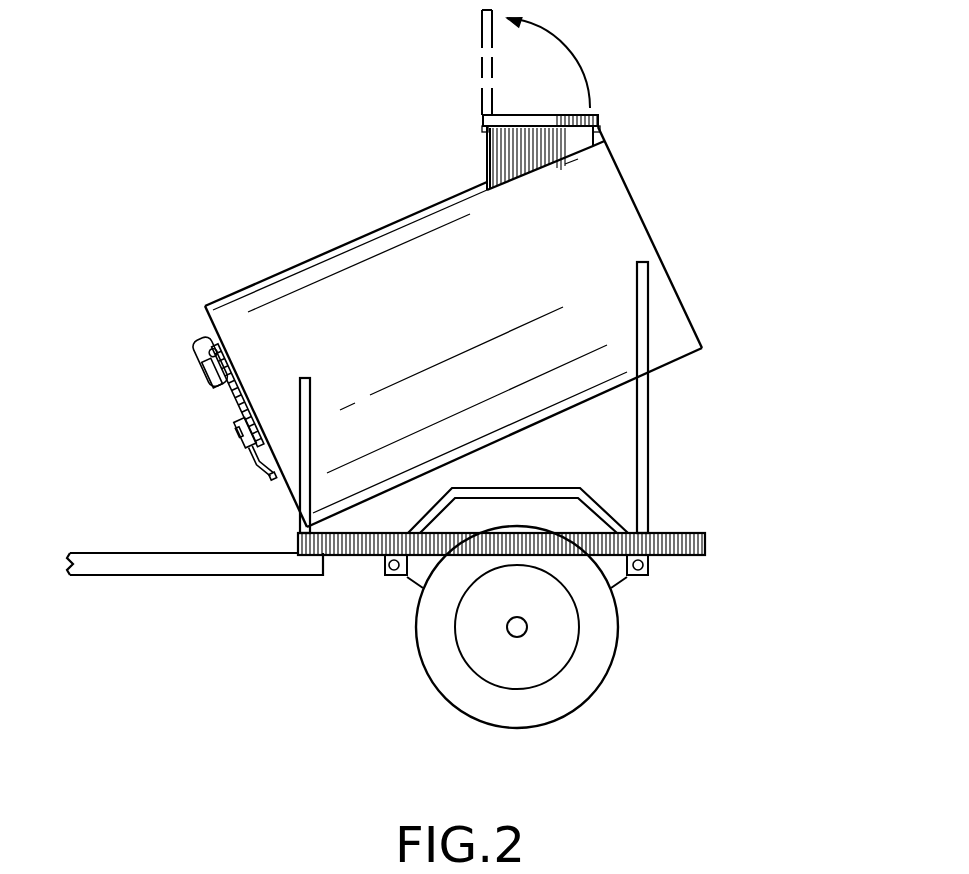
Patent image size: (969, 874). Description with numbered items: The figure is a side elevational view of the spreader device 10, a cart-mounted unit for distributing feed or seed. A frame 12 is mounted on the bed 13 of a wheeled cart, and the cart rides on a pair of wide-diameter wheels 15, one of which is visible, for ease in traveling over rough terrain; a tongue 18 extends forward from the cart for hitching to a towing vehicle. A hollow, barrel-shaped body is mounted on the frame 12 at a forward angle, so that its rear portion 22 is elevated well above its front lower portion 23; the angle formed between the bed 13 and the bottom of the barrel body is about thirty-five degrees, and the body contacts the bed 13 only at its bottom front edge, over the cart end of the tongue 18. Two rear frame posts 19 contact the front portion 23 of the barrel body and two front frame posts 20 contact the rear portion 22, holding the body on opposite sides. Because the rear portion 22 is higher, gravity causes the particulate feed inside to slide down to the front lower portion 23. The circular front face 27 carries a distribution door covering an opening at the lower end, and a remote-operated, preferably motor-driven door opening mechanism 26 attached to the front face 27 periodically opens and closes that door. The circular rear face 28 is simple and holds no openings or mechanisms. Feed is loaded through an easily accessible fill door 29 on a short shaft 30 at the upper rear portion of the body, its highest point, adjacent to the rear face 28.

The spreader device 10 is at (642, 160).
The frame 12 is at (657, 417).
The bed 13 is at (705, 543).
The wheels 15 is at (603, 657).
The tongue 18 is at (150, 575).
The rear frame posts 19 is at (648, 482).
The front frame posts 20 is at (302, 516).
The rear portion 22 is at (690, 308).
The front lower portion 23 is at (281, 492).
The door opening mechanism 26 is at (205, 388).
The front face 27 is at (210, 321).
The rear face 28 is at (642, 218).
The fill door 29 is at (483, 25).
The short shaft 30 is at (490, 150).